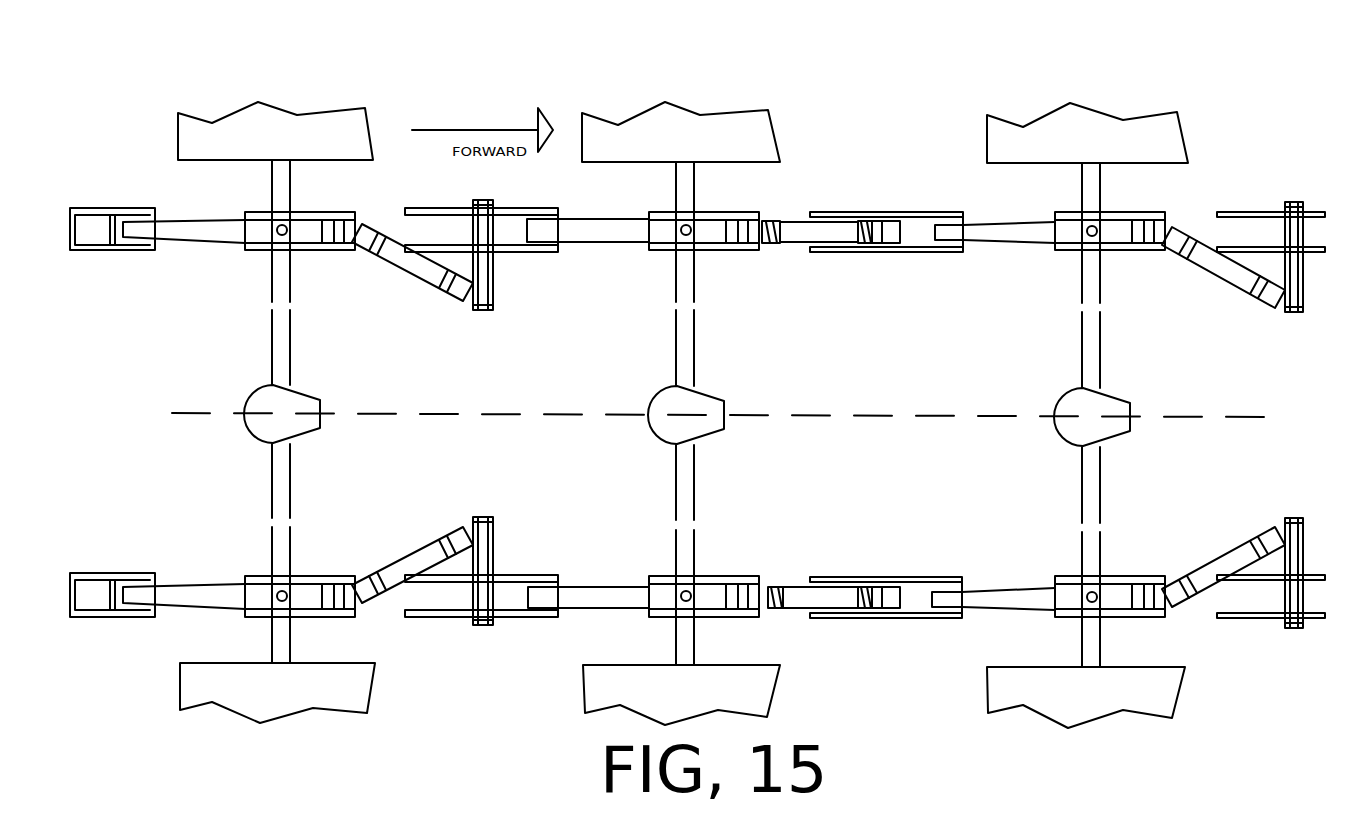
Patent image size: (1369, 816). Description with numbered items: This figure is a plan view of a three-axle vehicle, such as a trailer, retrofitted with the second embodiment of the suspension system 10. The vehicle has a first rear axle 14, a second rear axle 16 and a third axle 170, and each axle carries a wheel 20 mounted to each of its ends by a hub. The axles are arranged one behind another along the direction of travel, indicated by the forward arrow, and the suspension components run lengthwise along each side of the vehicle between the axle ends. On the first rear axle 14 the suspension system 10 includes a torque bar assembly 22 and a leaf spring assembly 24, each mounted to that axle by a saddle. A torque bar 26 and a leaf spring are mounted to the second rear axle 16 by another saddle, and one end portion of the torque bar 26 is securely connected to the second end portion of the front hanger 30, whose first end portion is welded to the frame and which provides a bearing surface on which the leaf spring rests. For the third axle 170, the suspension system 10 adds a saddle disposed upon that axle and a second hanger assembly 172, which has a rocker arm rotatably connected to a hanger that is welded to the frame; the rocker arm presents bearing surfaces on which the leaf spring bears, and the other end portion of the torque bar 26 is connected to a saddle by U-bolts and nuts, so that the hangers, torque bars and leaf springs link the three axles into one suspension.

The suspension system 10 is at (1223, 132).
The first rear axle 14 is at (288, 345).
The second rear axle 16 is at (697, 330).
The wheel 20 is at (300, 112).
The torque bar assembly 22 is at (1233, 280).
The leaf spring assembly 24 is at (208, 243).
The torque bar 26 is at (795, 588).
The front hanger 30 is at (1237, 208).
The third axle 170 is at (1075, 323).
The second hanger assembly 172 is at (904, 191).